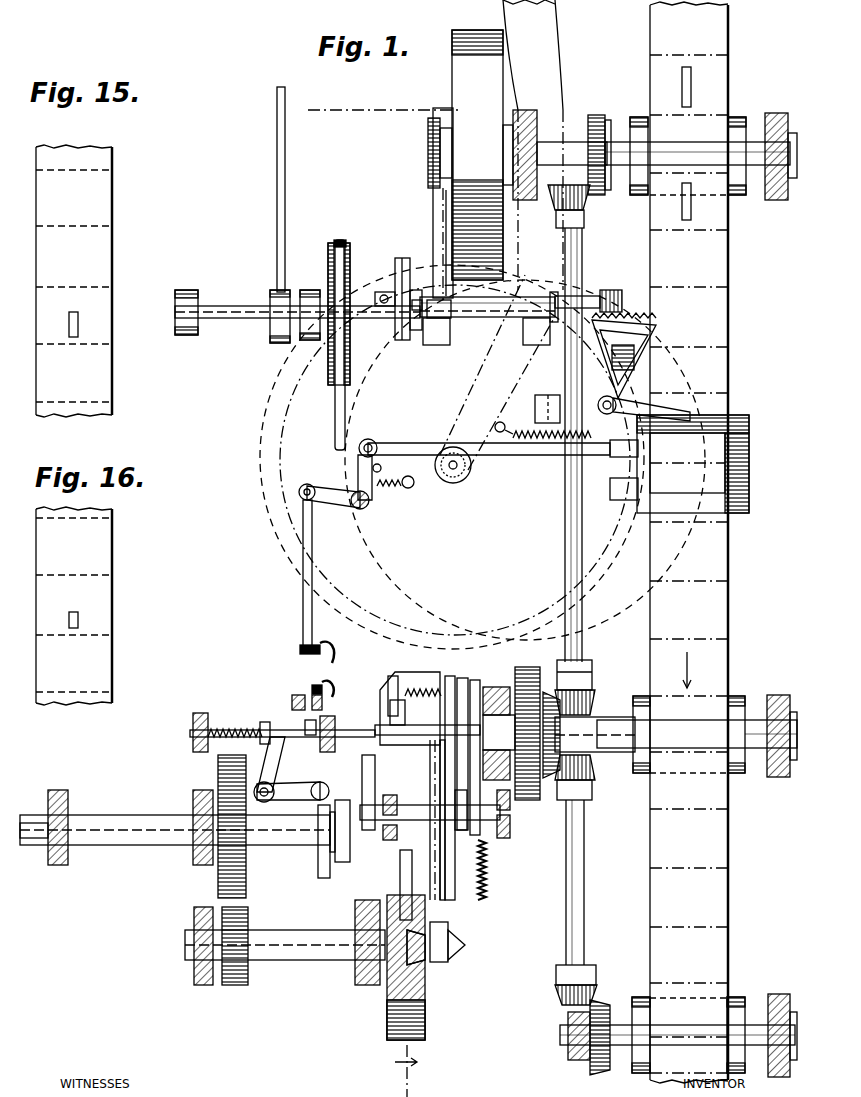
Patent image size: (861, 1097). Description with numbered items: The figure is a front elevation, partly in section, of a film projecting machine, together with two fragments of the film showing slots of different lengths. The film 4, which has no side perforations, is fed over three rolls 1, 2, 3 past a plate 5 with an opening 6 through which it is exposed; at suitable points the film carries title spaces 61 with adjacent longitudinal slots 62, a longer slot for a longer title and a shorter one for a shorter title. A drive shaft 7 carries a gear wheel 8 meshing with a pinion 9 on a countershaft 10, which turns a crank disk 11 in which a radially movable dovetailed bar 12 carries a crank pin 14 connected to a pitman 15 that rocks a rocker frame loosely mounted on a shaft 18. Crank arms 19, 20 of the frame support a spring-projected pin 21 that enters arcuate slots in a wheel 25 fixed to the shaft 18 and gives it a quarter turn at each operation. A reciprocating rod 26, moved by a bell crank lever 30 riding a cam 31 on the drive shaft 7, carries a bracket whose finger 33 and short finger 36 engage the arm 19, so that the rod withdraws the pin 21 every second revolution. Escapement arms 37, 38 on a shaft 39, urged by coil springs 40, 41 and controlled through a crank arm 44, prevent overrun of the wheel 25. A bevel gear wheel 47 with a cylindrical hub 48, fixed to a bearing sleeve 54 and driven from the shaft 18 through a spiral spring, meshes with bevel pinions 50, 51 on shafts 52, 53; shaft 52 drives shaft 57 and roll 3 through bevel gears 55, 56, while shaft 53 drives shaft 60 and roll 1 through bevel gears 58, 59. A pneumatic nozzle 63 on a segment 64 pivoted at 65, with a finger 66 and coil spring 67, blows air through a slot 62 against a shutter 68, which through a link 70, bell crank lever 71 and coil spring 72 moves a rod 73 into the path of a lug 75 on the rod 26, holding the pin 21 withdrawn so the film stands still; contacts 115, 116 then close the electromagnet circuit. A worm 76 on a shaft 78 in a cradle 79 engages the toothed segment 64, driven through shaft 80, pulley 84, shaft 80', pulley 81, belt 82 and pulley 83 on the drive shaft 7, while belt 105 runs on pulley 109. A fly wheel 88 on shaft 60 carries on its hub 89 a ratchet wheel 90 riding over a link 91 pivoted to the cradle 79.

In FIG. 1, the roll 1 is at (735, 115).
In FIG. 1, the feed roll 2 is at (738, 700).
In FIG. 1, the roll 3 is at (740, 1000).
In FIG. 15, the film 4 is at (97, 383).
In FIG. 16, the film 4 is at (97, 548).
In FIG. 1, the film 4 is at (260, 110).
In FIG. 1, the plate 5 is at (740, 480).
In FIG. 1, the opening 6 is at (725, 460).
In FIG. 1, the drive shaft 7 is at (100, 845).
In FIG. 1, the gear wheel 8 is at (246, 878).
In FIG. 1, the pinion 9 is at (235, 985).
In FIG. 1, the countershaft 10 is at (310, 960).
In FIG. 1, the crank disk 11 is at (425, 995).
In FIG. 1, the dovetailed bar 12 is at (425, 958).
In FIG. 1, the crank pin 14 is at (465, 945).
In FIG. 1, the pitman 15 is at (445, 905).
In FIG. 1, the shaft 18 is at (495, 720).
In FIG. 1, the crank arm 19 is at (392, 672).
In FIG. 1, the crank arm 20 is at (450, 676).
In FIG. 1, the pin 21 is at (462, 678).
In FIG. 1, the wheel 25 is at (474, 685).
In FIG. 1, the reciprocating rod 26 is at (285, 722).
In FIG. 1, the bell crank lever 30 is at (290, 766).
In FIG. 1, the cam 31 is at (318, 862).
In FIG. 1, the finger 33 is at (418, 680).
In FIG. 1, the short finger 36 is at (405, 728).
In FIG. 1, the escapement arm 37 is at (510, 810).
In FIG. 1, the escapement arm 38 is at (455, 800).
In FIG. 1, the shaft 39 is at (430, 830).
In FIG. 1, the coil spring 40 is at (486, 875).
In FIG. 1, the coil spring 41 is at (445, 865).
In FIG. 1, the crank arm 44 is at (375, 785).
In FIG. 1, the bevel gear wheel 47 is at (560, 720).
In FIG. 1, the cylindrical hub 48 is at (525, 667).
In FIG. 1, the bevel pinion 50 is at (595, 770).
In FIG. 1, the bevel pinion 51 is at (592, 692).
In FIG. 1, the shaft 52 is at (584, 870).
In FIG. 1, the shaft 53 is at (583, 540).
In FIG. 1, the bearing sleeve 54 is at (676, 734).
In FIG. 1, the bevel gear 55 is at (560, 1002).
In FIG. 1, the bevel gear 56 is at (598, 1070).
In FIG. 1, the shaft 57 is at (622, 1025).
In FIG. 1, the bevel gear 58 is at (588, 210).
In FIG. 1, the bevel gear 59 is at (592, 120).
In FIG. 1, the shaft 60 is at (617, 140).
In FIG. 1, the title space 61 is at (735, 130).
In FIG. 15, the longitudinal slot 62 is at (74, 325).
In FIG. 16, the longitudinal slot 62 is at (74, 620).
In FIG. 1, the longitudinal slot 62 is at (687, 85).
In FIG. 1, the pneumatic nozzle 63 is at (680, 415).
In FIG. 1, the segment 64 is at (598, 352).
In FIG. 1, the pivot 65 is at (600, 400).
In FIG. 1, the finger 66 is at (605, 414).
In FIG. 1, the coil spring 67 is at (545, 440).
In FIG. 1, the shutter 68 is at (640, 383).
In FIG. 1, the link 70 is at (470, 458).
In FIG. 1, the bell crank lever 71 is at (322, 490).
In FIG. 1, the coil spring 72 is at (385, 495).
In FIG. 1, the rod 73 is at (303, 625).
In FIG. 1, the lug 75 is at (305, 727).
In FIG. 1, the worm 76 is at (612, 290).
In FIG. 1, the shaft 78 is at (470, 305).
In FIG. 1, the cradle 79 is at (418, 332).
In FIG. 1, the shaft 80 is at (489, 319).
In FIG. 1, the shaft 80' is at (297, 303).
In FIG. 1, the pulley 81 is at (350, 256).
In FIG. 1, the belt 82 is at (335, 402).
In FIG. 1, the pulley 83 is at (350, 855).
In FIG. 1, the pulley 84 is at (395, 270).
In FIG. 1, the fly wheel 88 is at (477, 155).
In FIG. 1, the hub 89 is at (445, 152).
In FIG. 1, the ratchet wheel 90 is at (428, 132).
In FIG. 1, the link 91 is at (433, 235).
In FIG. 1, the belt 105 is at (285, 205).
In FIG. 1, the pulley 109 is at (272, 340).
In FIG. 1, the contact 115 is at (330, 660).
In FIG. 1, the contact 116 is at (330, 692).